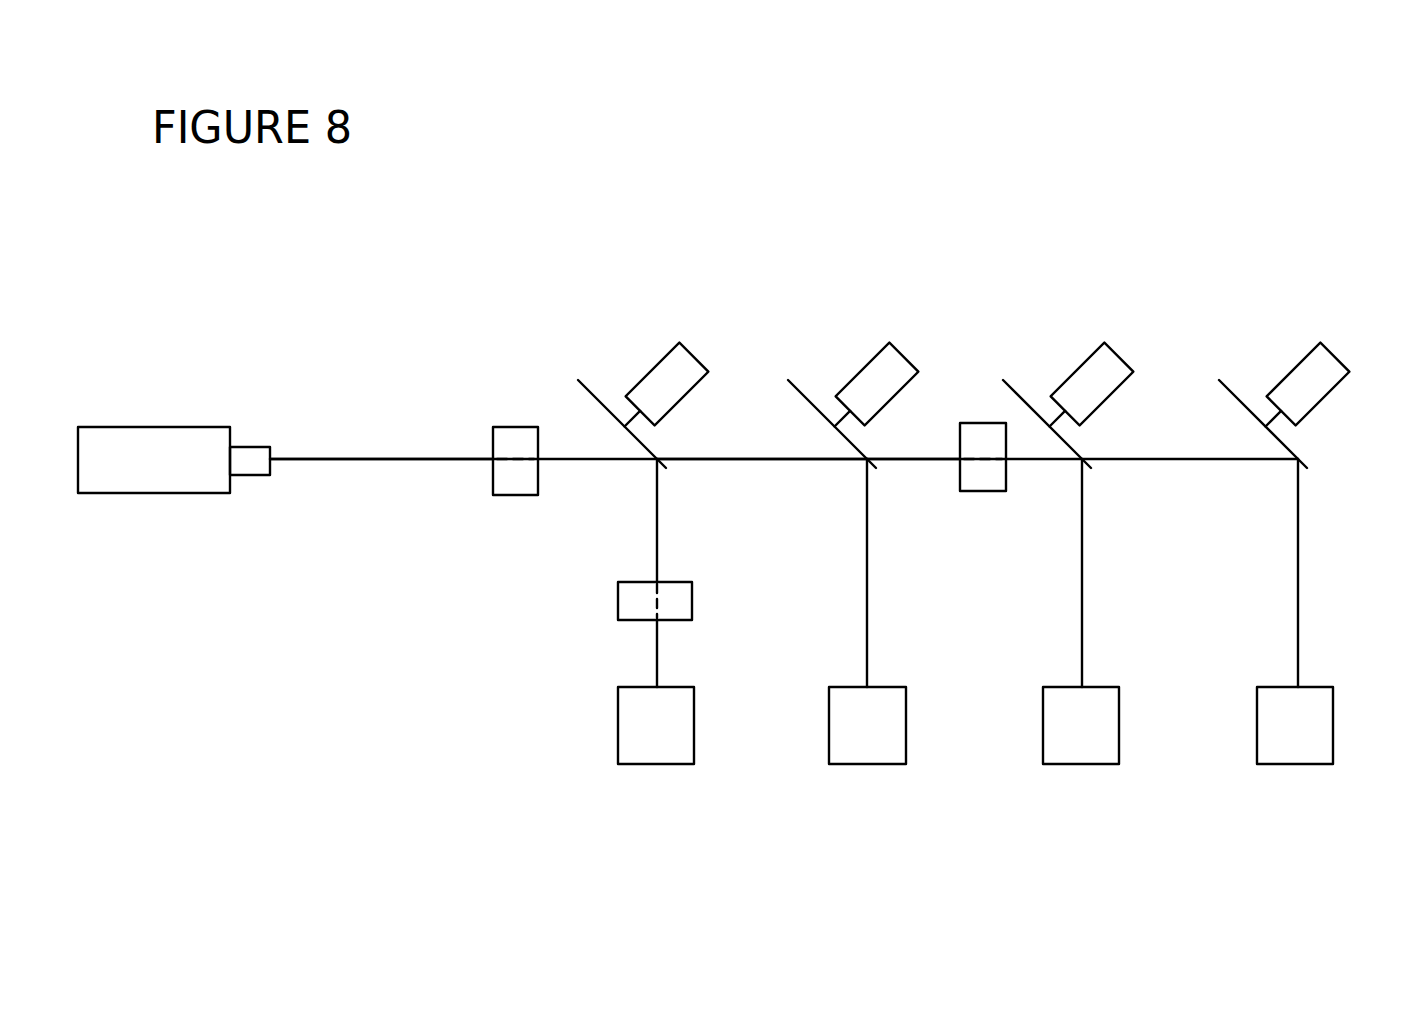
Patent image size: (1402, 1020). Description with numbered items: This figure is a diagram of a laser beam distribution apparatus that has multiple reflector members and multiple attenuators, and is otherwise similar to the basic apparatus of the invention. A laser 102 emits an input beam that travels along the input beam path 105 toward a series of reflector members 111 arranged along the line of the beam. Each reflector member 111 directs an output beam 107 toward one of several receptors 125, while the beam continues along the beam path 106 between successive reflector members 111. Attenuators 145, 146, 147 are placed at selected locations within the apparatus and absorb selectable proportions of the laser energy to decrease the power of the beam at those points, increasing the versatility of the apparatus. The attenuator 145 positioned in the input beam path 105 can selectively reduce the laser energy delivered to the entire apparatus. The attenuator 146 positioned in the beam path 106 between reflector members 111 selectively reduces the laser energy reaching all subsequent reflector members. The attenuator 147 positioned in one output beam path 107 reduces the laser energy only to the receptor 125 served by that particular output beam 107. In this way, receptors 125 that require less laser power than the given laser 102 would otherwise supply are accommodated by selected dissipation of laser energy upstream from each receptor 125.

The laser 102 is at (118, 493).
The input beam path 105 is at (340, 459).
The attenuator 145 is at (507, 495).
The attenuator 146 is at (983, 491).
The attenuator 147 is at (618, 600).
The reflector members 111 is at (630, 328).
The beam path 106 is at (730, 459).
The output beam 107 is at (657, 643).
The receptors 125 is at (652, 764).